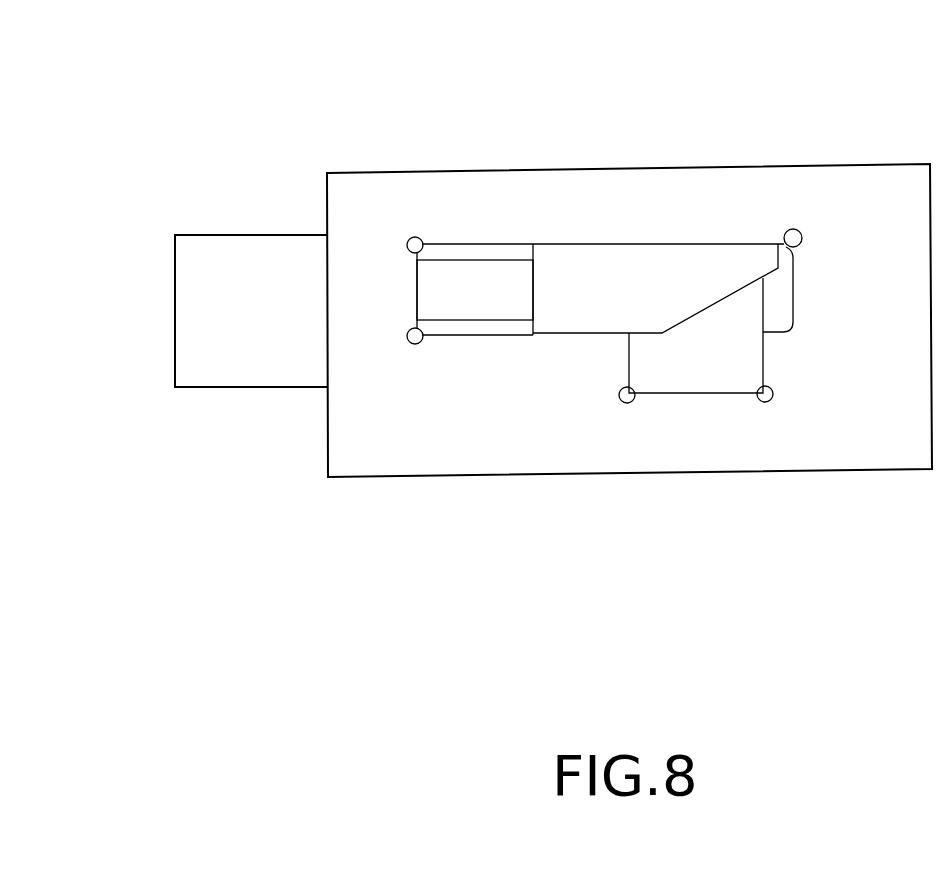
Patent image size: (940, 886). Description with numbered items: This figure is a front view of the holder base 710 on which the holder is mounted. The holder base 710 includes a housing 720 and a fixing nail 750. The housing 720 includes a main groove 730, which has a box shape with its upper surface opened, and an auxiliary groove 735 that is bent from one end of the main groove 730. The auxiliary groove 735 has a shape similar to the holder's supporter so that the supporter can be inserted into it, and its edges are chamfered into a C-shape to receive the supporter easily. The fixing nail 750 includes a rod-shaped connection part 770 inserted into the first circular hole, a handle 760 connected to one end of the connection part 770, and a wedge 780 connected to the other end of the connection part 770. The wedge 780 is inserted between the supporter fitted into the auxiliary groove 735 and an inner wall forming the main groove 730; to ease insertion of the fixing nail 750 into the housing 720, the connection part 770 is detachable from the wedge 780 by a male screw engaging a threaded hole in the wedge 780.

The holder base 710 is at (596, 552).
The housing 720 is at (853, 164).
The main groove 730 is at (472, 328).
The auxiliary groove 735 is at (720, 363).
The fixing nail 750 is at (258, 210).
The handle 760 is at (217, 232).
The connection part 770 is at (478, 277).
The wedge 780 is at (628, 260).